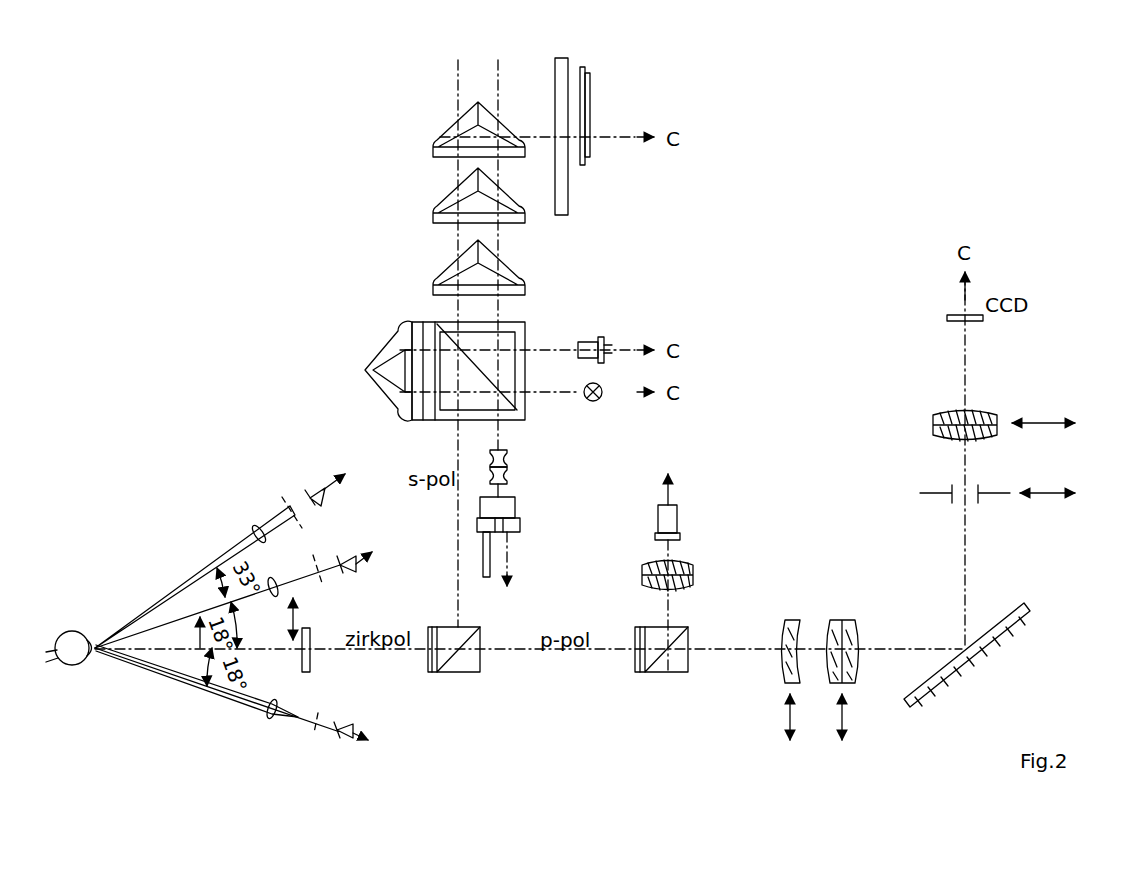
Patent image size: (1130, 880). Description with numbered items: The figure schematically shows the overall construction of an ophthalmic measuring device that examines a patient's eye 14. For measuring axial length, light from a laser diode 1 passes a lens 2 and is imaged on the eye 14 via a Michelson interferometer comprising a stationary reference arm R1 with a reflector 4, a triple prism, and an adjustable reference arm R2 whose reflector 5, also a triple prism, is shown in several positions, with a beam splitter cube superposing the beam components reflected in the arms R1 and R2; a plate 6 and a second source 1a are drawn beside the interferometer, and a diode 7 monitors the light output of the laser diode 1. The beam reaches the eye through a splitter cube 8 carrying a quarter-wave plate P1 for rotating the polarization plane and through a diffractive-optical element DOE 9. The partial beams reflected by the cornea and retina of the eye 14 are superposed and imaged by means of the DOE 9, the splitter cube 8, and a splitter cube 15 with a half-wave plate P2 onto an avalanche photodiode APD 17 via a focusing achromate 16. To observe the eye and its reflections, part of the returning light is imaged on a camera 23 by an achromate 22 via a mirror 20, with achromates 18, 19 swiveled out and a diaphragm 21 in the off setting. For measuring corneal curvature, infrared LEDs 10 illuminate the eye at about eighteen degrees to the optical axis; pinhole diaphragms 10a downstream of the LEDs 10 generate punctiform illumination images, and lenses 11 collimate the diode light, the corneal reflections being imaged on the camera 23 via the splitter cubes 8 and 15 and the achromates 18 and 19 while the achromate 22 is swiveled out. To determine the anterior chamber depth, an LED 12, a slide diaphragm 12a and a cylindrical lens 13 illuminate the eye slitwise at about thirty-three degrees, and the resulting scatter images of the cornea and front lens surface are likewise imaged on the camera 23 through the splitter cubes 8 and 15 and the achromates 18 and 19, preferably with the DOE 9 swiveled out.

The laser diode 1 is at (512, 510).
The second light source 1a is at (598, 401).
The collimating lens 2 is at (510, 470).
The reflector 4 is at (385, 343).
The reflector 5 is at (447, 273).
The plate / filter 6 is at (565, 155).
The diode 7 is at (585, 340).
The splitter cube 8 is at (473, 667).
The diffractive-optical element DOE 9 is at (312, 665).
The LEDs 10 is at (343, 571).
The pinhole diaphragms 10a is at (322, 552).
The lenses 11 is at (266, 716).
The LED 12 is at (305, 486).
The slide diaphragm 12a is at (278, 497).
The cylindrical lens 13 is at (248, 530).
The eye 14 is at (73, 627).
The splitter cube 15 is at (678, 665).
The achromate 16 is at (693, 570).
The avalanche photodiode APD 17 is at (680, 528).
The achromate 18 is at (790, 620).
The achromate 19 is at (848, 620).
The mirror 20 is at (980, 650).
The diaphragm 21 is at (925, 493).
The achromate 22 is at (932, 420).
The CCD camera 23 is at (942, 319).
The stationary reference arm R1 is at (347, 362).
The adjustable reference arm R2 is at (412, 117).
The quarter-wave plate P1 is at (433, 672).
The half-wave plate P2 is at (640, 672).